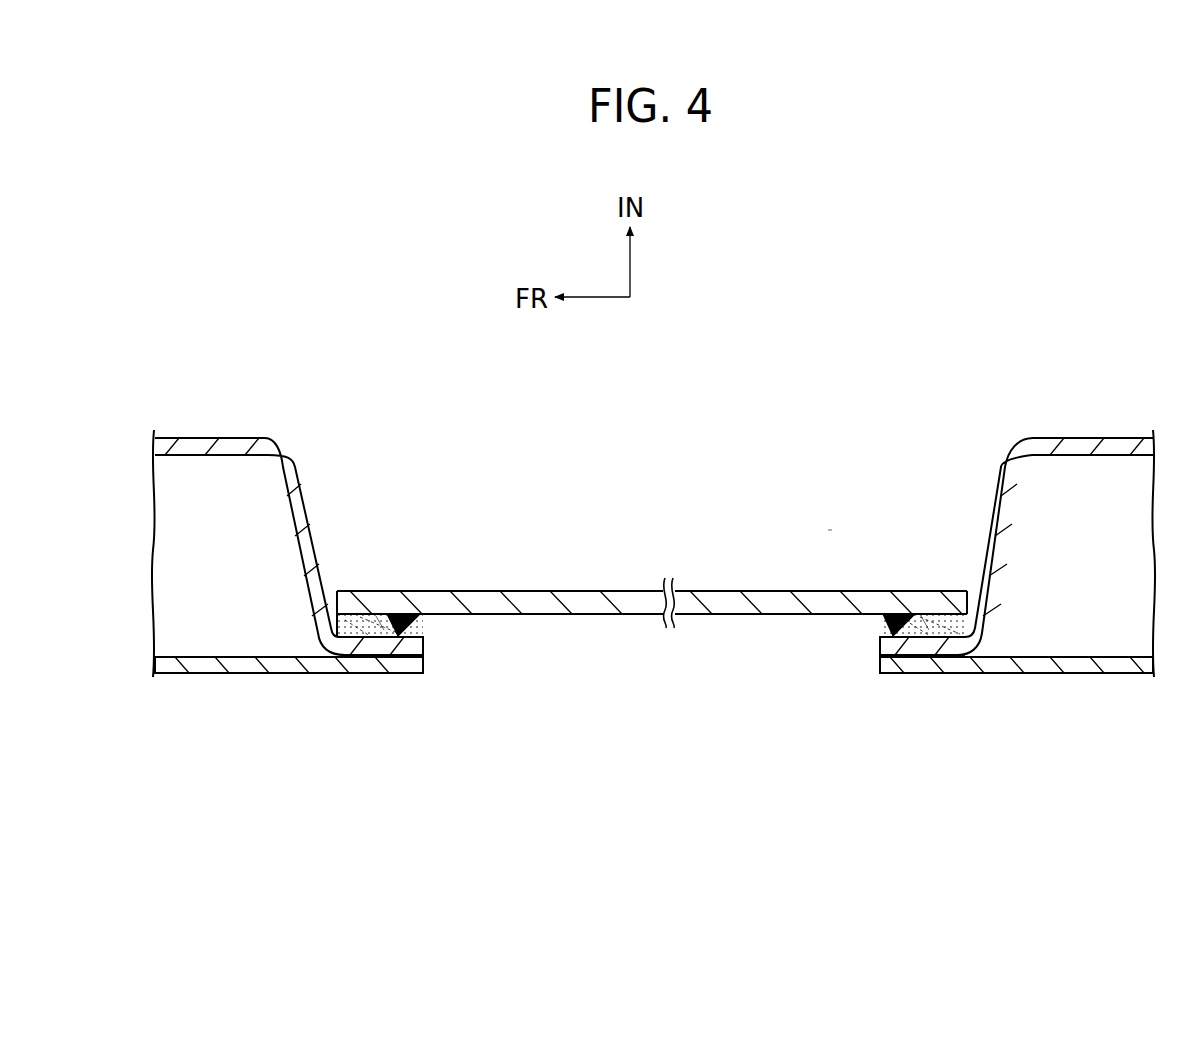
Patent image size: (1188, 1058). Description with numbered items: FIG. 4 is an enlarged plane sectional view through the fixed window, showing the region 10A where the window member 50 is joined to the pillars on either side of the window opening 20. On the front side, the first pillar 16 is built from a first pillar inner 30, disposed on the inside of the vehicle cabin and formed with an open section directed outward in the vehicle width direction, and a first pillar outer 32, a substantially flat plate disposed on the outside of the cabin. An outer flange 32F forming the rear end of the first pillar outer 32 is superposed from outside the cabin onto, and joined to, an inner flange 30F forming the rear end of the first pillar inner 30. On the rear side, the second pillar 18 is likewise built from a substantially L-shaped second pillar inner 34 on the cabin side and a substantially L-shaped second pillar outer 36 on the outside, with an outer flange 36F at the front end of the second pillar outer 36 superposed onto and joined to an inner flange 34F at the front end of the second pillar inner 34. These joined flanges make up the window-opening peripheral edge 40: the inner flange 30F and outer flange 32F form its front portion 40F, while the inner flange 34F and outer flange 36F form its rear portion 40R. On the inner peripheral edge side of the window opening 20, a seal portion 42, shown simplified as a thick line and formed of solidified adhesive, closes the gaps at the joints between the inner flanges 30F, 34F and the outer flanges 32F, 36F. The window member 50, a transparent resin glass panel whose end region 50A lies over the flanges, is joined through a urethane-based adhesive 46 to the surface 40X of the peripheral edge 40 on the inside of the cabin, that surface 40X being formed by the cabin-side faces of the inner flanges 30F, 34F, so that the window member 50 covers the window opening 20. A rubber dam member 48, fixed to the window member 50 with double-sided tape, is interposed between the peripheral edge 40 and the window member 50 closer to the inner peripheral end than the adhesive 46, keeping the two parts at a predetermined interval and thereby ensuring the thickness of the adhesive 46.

The vehicle lower structure 10A is at (831, 524).
The first pillar 16 is at (221, 390).
The second pillar 18 is at (1063, 357).
The window opening 20 is at (452, 674).
The first pillar inner panel 30 is at (247, 435).
The inner flange 30F is at (352, 632).
The first pillar outer panel 32 is at (255, 677).
The outer flange 32F is at (353, 660).
The second pillar inner panel 34 is at (1096, 434).
The inner flange 34F is at (940, 636).
The second pillar outer panel 36 is at (1090, 677).
The outer flange 36F is at (958, 660).
The window-opening peripheral edge 40 is at (656, 699).
The front portion 40F is at (382, 702).
The rear portion 40R is at (918, 704).
The surface 40X is at (380, 625).
The seal portion 42 is at (385, 668).
The adhesive 46 is at (387, 628).
The dam member 48 is at (405, 625).
The window member 50 is at (616, 588).
The cross member end portion 50A is at (558, 590).